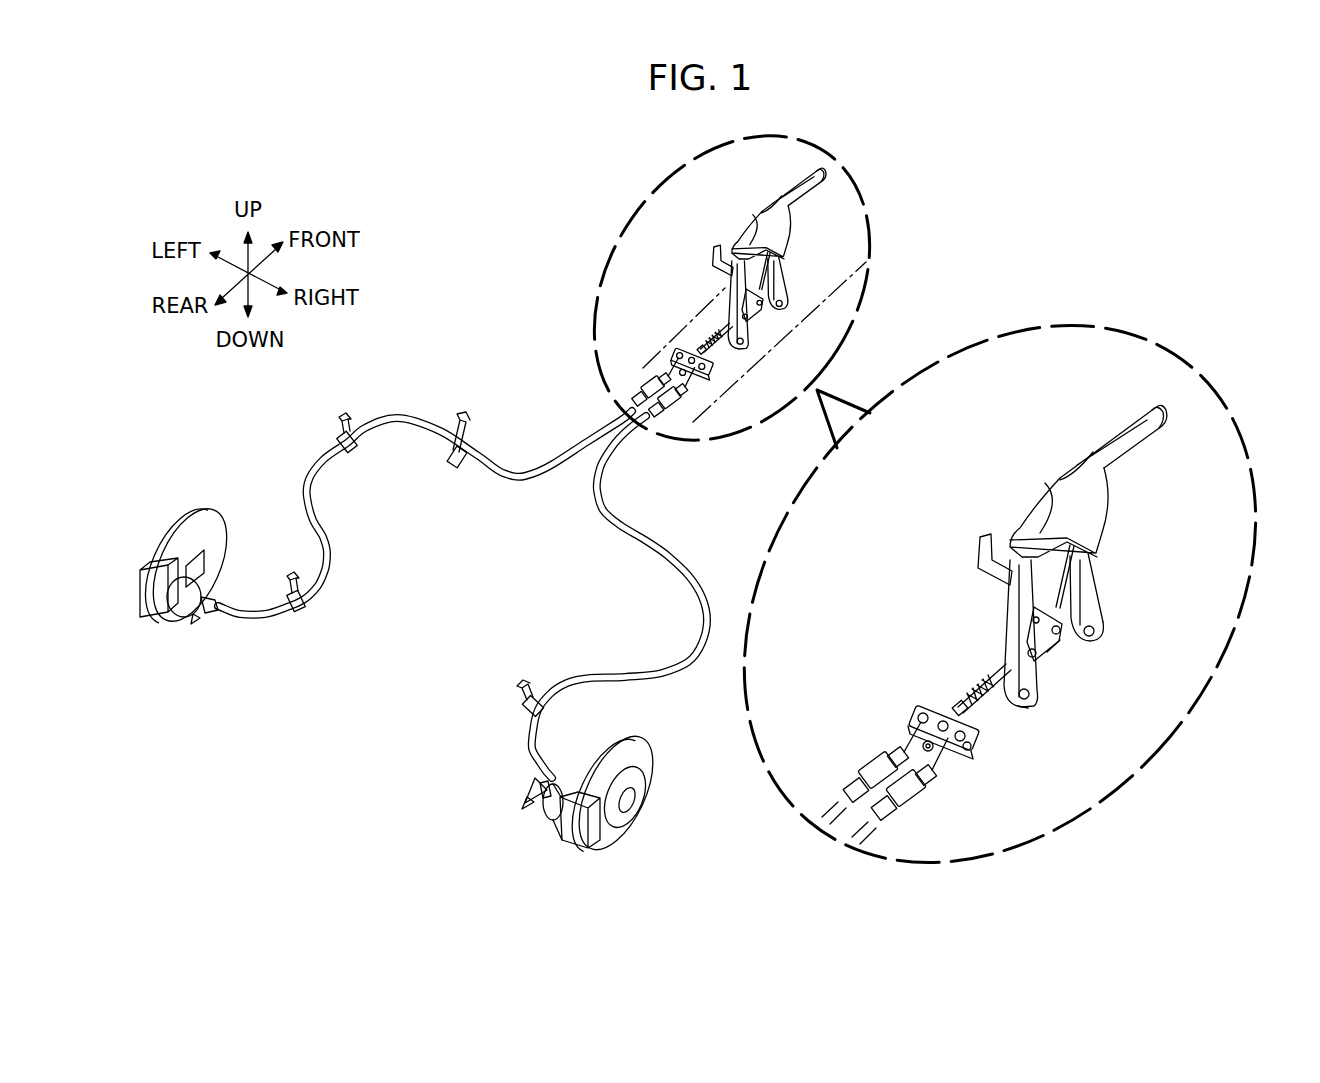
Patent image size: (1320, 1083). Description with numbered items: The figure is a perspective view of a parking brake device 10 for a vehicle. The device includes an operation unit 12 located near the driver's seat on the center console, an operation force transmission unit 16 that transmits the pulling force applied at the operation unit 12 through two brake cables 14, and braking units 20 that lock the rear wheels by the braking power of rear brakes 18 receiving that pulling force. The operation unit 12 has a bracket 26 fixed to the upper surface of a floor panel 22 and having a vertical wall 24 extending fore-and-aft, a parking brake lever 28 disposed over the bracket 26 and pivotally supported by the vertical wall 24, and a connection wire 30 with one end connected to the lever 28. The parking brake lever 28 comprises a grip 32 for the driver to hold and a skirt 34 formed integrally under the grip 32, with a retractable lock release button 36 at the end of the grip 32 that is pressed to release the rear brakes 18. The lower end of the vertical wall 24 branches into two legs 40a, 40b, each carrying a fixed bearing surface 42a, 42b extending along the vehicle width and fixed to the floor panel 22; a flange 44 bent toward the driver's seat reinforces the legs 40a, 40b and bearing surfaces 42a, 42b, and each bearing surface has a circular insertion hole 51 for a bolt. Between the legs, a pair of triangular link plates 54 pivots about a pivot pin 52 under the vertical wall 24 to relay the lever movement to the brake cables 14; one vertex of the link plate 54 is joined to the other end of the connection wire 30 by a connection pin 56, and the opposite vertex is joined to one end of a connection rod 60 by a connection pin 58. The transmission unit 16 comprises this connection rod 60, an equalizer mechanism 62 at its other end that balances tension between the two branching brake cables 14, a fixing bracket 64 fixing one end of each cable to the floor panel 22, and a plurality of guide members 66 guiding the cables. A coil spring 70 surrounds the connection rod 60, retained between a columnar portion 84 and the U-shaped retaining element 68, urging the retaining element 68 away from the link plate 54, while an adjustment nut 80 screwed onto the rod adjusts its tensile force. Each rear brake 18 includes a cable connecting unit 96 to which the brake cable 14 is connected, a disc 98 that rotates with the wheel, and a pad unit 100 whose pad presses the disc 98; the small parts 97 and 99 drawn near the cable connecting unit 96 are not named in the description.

The parking brake device 10 is at (912, 183).
The operation unit 12 is at (731, 216).
The brake cables 14 is at (400, 418).
The operation force transmission unit 16 is at (638, 460).
The rear brakes 18 is at (214, 636).
The braking units 20 is at (197, 493).
The floor panel 22 is at (882, 279).
The vertical wall 24 is at (1012, 598).
The bracket 26 is at (727, 299).
The parking brake lever 28 is at (815, 203).
The connection wire 30 is at (1071, 567).
The grip 32 is at (1130, 440).
The skirt 34 is at (1097, 526).
The lock release button 36 is at (1166, 412).
The leg 40a is at (1080, 604).
The leg 40b is at (1008, 662).
The fixed bearing surface 42a is at (1096, 636).
The fixed bearing surface 42b is at (1024, 706).
The flange 44 is at (1107, 593).
The insertion hole 51 is at (1063, 640).
The pivot pin 52 is at (1034, 624).
The link plates 54 is at (1052, 646).
The connection pin 56 is at (1062, 642).
The connection pin 58 is at (1036, 660).
The connection rod 60 is at (723, 365).
The equalizer mechanism 62 is at (669, 347).
The fixing bracket 64 is at (635, 385).
The guide members 66 is at (352, 444).
The retaining element 68 is at (968, 750).
The coil spring 70 is at (988, 688).
The adjustment nut 80 is at (930, 752).
The columnar portion 84 is at (722, 330).
The cable connecting unit 96 is at (178, 610).
The cable bracket 97 is at (210, 598).
The disc 98 is at (218, 540).
The cable end tip 99 is at (195, 625).
The pad unit 100 is at (148, 583).